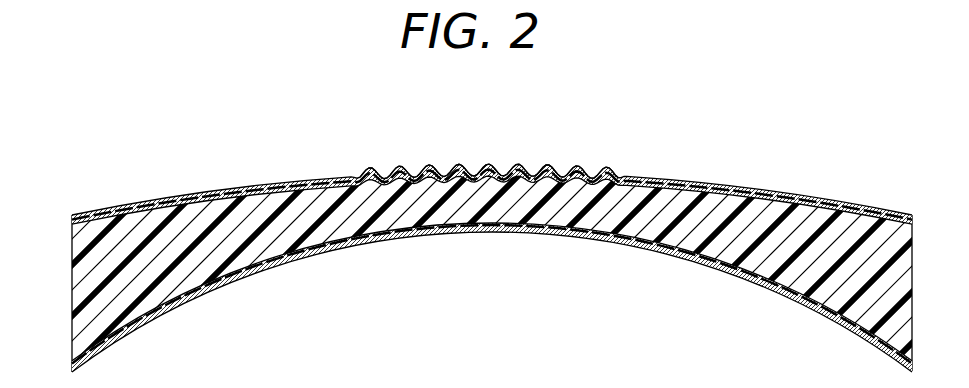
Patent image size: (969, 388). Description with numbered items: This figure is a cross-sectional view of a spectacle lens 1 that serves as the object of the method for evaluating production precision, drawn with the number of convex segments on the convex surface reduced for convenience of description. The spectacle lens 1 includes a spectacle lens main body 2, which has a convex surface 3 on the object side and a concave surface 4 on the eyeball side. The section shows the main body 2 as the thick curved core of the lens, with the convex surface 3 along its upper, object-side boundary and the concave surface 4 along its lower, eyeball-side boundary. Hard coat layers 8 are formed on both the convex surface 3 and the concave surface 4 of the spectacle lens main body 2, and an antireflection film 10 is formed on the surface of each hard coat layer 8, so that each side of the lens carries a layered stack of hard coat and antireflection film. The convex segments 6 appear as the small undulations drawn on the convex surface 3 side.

The spectacle lens 1 is at (797, 119).
The spectacle lens main body 2 is at (74, 295).
The convex surface 3 is at (200, 197).
The concave surface 4 is at (205, 283).
The corrugated portion 6 is at (372, 177).
The hard coat layer 8 is at (251, 192).
The antireflection film 10 is at (292, 188).